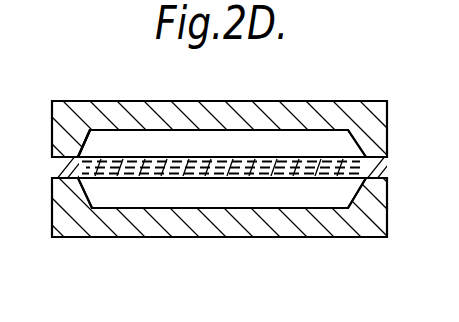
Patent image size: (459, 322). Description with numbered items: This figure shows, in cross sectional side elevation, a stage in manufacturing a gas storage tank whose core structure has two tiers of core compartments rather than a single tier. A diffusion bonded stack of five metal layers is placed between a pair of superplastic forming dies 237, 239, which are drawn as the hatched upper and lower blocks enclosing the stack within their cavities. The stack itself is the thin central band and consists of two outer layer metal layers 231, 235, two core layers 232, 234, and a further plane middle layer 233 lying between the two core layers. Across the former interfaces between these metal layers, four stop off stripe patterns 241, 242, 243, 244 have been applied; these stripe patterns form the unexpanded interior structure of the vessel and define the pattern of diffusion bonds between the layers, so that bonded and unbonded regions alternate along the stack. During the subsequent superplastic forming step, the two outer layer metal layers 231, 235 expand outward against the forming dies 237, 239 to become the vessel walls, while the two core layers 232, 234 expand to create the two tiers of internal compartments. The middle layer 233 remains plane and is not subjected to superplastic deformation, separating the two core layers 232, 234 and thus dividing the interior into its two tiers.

The outer layer metal layer 231 is at (257, 157).
The core layer 232 is at (318, 157).
The middle layer 233 is at (285, 178).
The core layer 234 is at (183, 178).
The outer layer metal layer 235 is at (257, 178).
The superplastic forming die 237 is at (370, 115).
The superplastic forming die 239 is at (343, 222).
The stop off stripe pattern 241 is at (88, 130).
The stop off stripe pattern 242 is at (123, 157).
The stop off stripe pattern 243 is at (178, 157).
The stop off stripe pattern 244 is at (223, 157).